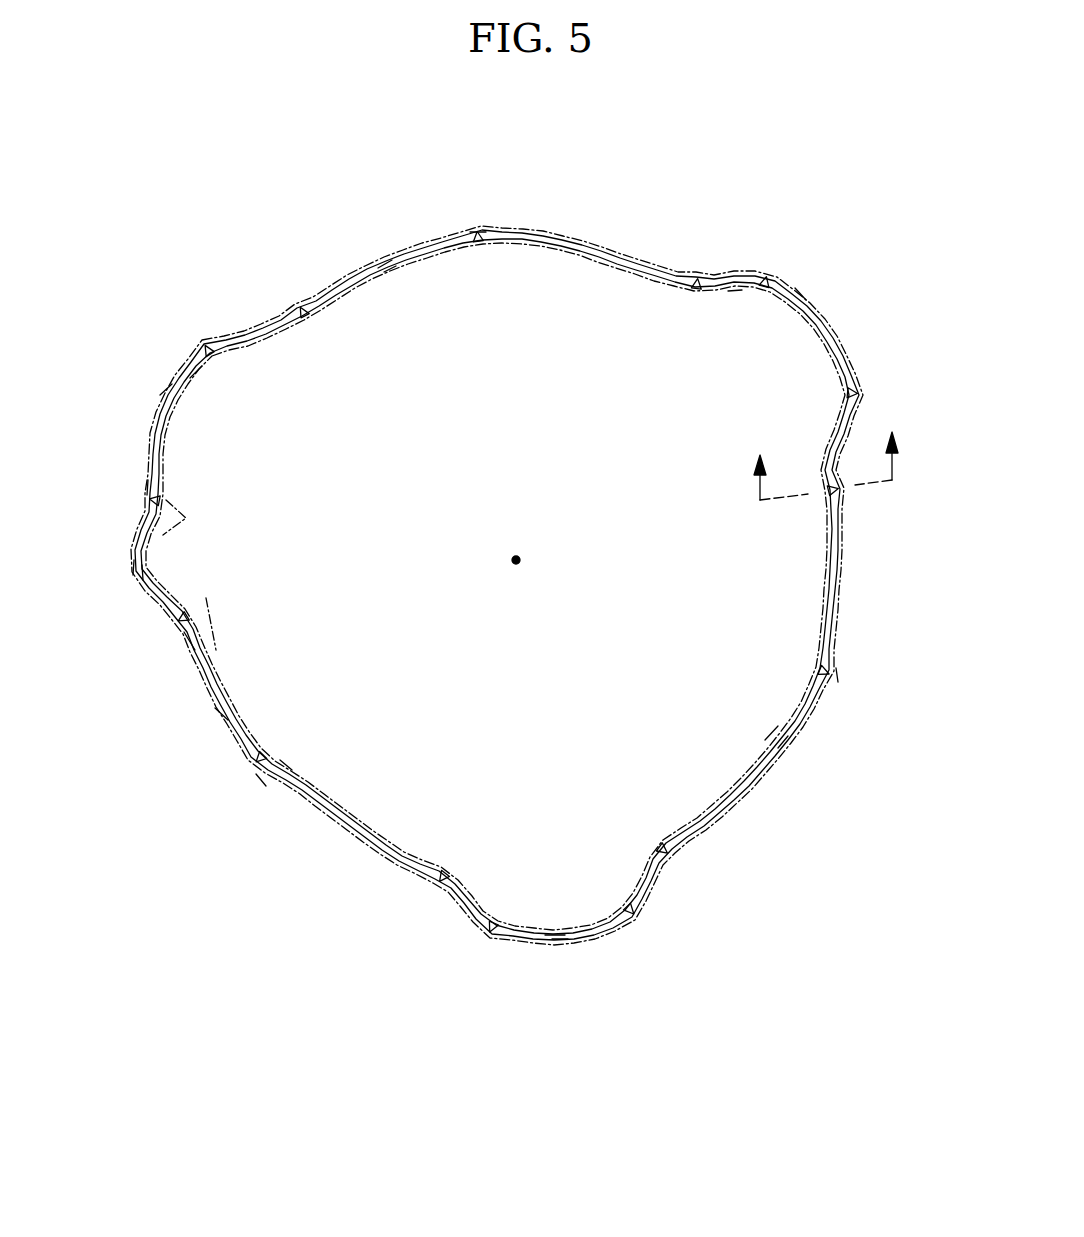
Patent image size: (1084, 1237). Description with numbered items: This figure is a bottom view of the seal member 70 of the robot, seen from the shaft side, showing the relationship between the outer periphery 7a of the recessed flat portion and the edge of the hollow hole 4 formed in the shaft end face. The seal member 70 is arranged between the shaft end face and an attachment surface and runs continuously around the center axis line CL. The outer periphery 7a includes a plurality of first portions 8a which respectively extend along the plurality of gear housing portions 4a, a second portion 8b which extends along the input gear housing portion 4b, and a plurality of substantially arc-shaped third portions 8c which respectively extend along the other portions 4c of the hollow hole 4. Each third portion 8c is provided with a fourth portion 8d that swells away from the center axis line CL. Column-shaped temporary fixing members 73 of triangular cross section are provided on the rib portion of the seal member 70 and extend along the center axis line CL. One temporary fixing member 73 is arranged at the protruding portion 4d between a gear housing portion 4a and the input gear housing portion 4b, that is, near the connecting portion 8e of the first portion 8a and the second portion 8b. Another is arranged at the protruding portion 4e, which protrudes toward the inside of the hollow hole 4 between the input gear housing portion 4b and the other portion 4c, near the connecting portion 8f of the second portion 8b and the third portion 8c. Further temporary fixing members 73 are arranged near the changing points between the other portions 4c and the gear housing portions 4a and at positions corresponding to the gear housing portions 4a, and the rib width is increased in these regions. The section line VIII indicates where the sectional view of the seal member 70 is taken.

The hollow hole 4 is at (605, 264).
The gear housing portion 4a is at (198, 378).
The input gear housing portion 4b is at (150, 573).
The other portion 4c is at (388, 277).
The protruding portion 4d is at (177, 518).
The protruding portion 4e is at (207, 603).
The outer periphery 7a is at (585, 237).
The first portion 8a is at (168, 389).
The second portion 8b is at (128, 570).
The third portion 8c is at (385, 268).
The fourth portion 8d is at (478, 228).
The connecting portion 8e is at (148, 488).
The connecting portion 8f is at (183, 640).
The seal member 70 is at (856, 407).
The temporary fixing member 73 is at (209, 348).
The center axis line CL is at (524, 560).
The VIII-VIII line VIII is at (845, 486).